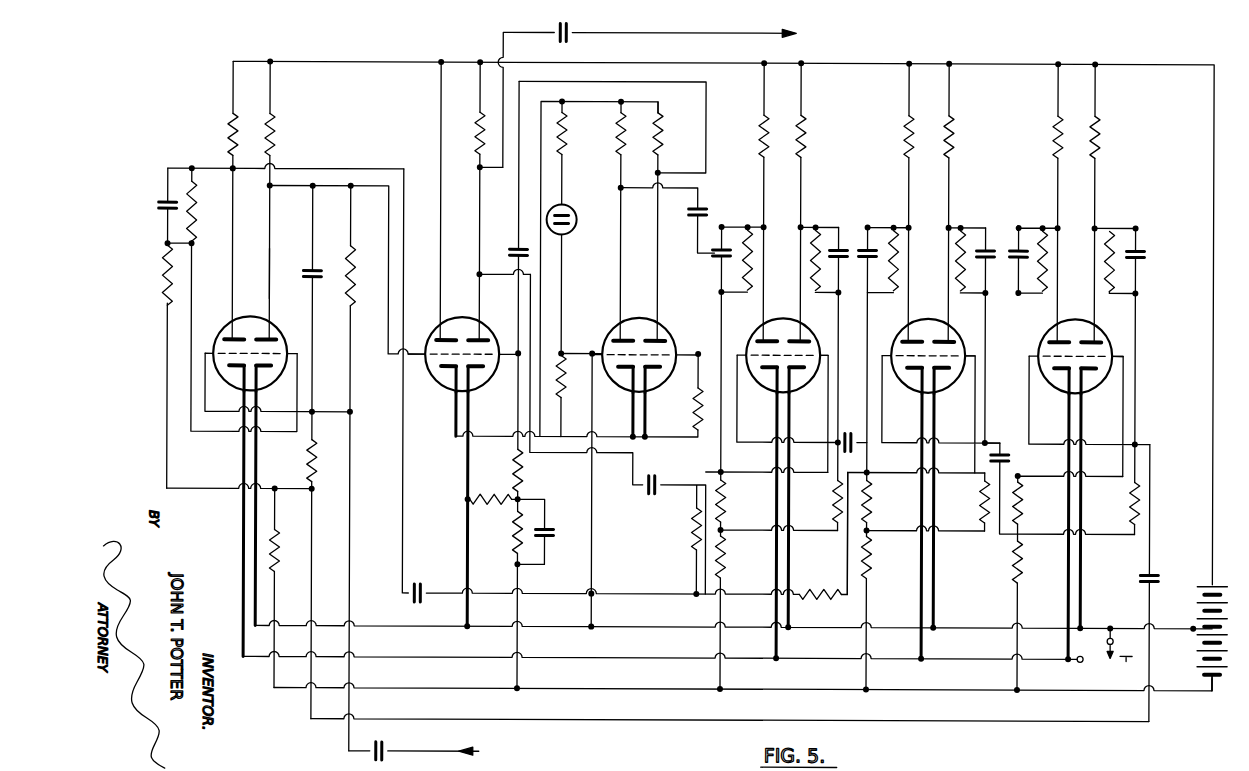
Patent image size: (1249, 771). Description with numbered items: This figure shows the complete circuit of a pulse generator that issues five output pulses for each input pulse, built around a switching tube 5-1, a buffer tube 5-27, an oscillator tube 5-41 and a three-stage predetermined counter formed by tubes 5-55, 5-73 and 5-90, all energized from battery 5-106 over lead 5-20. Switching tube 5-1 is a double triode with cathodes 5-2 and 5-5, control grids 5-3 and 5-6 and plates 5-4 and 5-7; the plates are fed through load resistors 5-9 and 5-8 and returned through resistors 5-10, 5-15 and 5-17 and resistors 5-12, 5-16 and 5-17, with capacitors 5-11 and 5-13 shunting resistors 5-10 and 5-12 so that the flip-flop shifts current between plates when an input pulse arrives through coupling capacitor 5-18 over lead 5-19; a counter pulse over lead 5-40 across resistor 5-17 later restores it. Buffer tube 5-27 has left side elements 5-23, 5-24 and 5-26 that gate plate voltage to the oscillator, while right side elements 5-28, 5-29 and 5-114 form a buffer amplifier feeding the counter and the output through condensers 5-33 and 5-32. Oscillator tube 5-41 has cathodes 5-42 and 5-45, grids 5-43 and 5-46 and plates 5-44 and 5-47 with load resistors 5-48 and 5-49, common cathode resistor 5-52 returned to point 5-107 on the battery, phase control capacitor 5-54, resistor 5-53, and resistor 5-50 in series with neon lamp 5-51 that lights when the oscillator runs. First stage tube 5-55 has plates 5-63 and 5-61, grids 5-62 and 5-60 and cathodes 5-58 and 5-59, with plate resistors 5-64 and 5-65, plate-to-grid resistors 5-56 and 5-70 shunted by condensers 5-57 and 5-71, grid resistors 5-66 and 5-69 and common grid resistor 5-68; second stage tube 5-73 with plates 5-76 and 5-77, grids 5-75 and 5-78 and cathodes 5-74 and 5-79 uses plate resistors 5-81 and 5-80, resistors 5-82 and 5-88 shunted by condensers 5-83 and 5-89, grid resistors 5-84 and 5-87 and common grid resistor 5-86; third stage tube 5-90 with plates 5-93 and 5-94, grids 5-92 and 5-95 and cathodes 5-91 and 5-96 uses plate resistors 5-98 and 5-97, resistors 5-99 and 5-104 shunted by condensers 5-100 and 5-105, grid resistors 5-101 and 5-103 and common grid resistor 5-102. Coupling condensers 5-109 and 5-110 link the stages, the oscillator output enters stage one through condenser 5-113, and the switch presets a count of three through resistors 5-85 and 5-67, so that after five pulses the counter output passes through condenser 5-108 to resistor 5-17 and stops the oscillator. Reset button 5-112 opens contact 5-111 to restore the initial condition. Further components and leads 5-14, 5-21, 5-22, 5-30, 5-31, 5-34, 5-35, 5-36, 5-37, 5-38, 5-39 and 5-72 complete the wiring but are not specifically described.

The switching tube 5-1 is at (254, 318).
The cathode 5-2 is at (240, 378).
The control grid 5-3 is at (223, 329).
The plate 5-4 is at (228, 314).
The cathode 5-5 is at (260, 378).
The control grid 5-6 is at (280, 329).
The plate 5-7 is at (272, 314).
The load resistor 5-8 is at (275, 150).
The load resistor 5-9 is at (227, 150).
The resistor 5-10 is at (197, 207).
The capacitor 5-11 is at (148, 207).
The resistor 5-12 is at (274, 264).
The capacitor 5-13 is at (316, 264).
The resistor 5-14 is at (346, 320).
The resistor 5-15 is at (161, 293).
The resistor 5-16 is at (304, 468).
The common grid resistor 5-17 is at (282, 542).
The input coupling capacitor 5-18 is at (385, 740).
The lead 5-19 is at (342, 548).
The lead 5-20 is at (331, 60).
The conductor 5-21 is at (390, 478).
The capacitor 5-22 is at (410, 608).
The left side element 5-23 is at (442, 378).
The cathode 5-24 is at (452, 400).
The left side element 5-26 is at (434, 330).
The buffer tube 5-27 is at (466, 314).
The right side element 5-28 is at (482, 378).
The right side element 5-29 is at (472, 400).
The resistor 5-30 is at (526, 482).
The capacitor 5-31 is at (504, 254).
The output condenser 5-32 is at (563, 42).
The condenser 5-33 is at (658, 34).
The resistor 5-34 is at (494, 488).
The capacitor 5-35 is at (554, 532).
The resistor 5-36 is at (508, 543).
The bus conductor 5-37 is at (626, 628).
The bus conductor 5-38 is at (546, 668).
The bus conductor 5-39 is at (632, 687).
The lead 5-40 is at (528, 719).
The oscillator tube 5-41 is at (643, 316).
The cathode 5-42 is at (630, 400).
The control grid 5-43 is at (620, 378).
The plate 5-44 is at (612, 330).
The cathode 5-45 is at (648, 400).
The control grid 5-46 is at (658, 378).
The plate 5-47 is at (666, 330).
The load resistor 5-48 is at (612, 152).
The load resistor 5-49 is at (664, 137).
The resistor 5-50 is at (568, 136).
The neon lamp 5-51 is at (578, 228).
The common cathode resistor 5-52 is at (568, 366).
The resistor 5-53 is at (696, 440).
The phase control capacitor 5-54 is at (712, 206).
The first counter stage tube 5-55 is at (787, 316).
The plate to grid resistor 5-56 is at (743, 229).
The condenser 5-57 is at (702, 252).
The cathode 5-58 is at (774, 400).
The cathode 5-59 is at (792, 400).
The control grid 5-60 is at (802, 378).
The plate 5-61 is at (806, 334).
The control grid 5-62 is at (766, 378).
The plate 5-63 is at (756, 334).
The plate resistor 5-64 is at (753, 150).
The plate resistor 5-65 is at (806, 150).
The grid resistor 5-66 is at (730, 517).
The resistor 5-67 is at (682, 544).
The common grid resistor 5-68 is at (730, 574).
The grid resistor 5-69 is at (826, 512).
The plate to grid resistor 5-70 is at (793, 260).
The condenser 5-71 is at (846, 232).
The bus conductor 5-72 is at (608, 596).
The second counter stage tube 5-73 is at (932, 316).
The cathode 5-74 is at (918, 400).
The control grid 5-75 is at (910, 378).
The plate 5-76 is at (900, 334).
The plate 5-77 is at (953, 334).
The control grid 5-78 is at (948, 378).
The cathode 5-79 is at (938, 400).
The plate resistor 5-80 is at (954, 150).
The plate resistor 5-81 is at (898, 150).
The plate to grid circuit resistor 5-82 is at (904, 252).
The condenser 5-83 is at (868, 232).
The grid resistor 5-84 is at (877, 517).
The branch resistor 5-85 is at (843, 587).
The common grid resistor 5-86 is at (877, 574).
The grid resistor 5-87 is at (978, 512).
The plate to grid circuit resistor 5-88 is at (952, 256).
The condenser 5-89 is at (982, 232).
The third counter stage tube 5-90 is at (1079, 316).
The cathode 5-91 is at (1066, 400).
The control grid 5-92 is at (1058, 378).
The plate 5-93 is at (1050, 334).
The plate 5-94 is at (1100, 334).
The control grid 5-95 is at (1094, 378).
The cathode 5-96 is at (1084, 400).
The plate resistor 5-97 is at (1100, 150).
The plate resistor 5-98 is at (1048, 150).
The plate to grid circuit resistor 5-99 is at (1052, 252).
The condenser 5-100 is at (1018, 232).
The grid resistor 5-101 is at (1028, 517).
The common grid resistor 5-102 is at (1030, 578).
The grid resistor 5-103 is at (1128, 513).
The plate to grid circuit resistor 5-104 is at (1118, 280).
The condenser 5-105 is at (1142, 252).
The battery 5-106 is at (1204, 678).
The point on battery 5-107 is at (1192, 626).
The output coupling condenser 5-108 is at (1162, 576).
The coupling condenser 5-109 is at (862, 445).
The coupling condenser 5-110 is at (1010, 452).
The contact 5-111 is at (1100, 636).
The reset button 5-112 is at (1132, 658).
The coupling condenser 5-113 is at (642, 492).
The right side element 5-114 is at (490, 330).